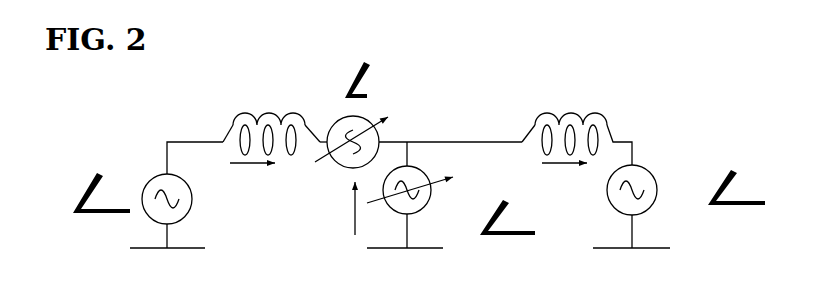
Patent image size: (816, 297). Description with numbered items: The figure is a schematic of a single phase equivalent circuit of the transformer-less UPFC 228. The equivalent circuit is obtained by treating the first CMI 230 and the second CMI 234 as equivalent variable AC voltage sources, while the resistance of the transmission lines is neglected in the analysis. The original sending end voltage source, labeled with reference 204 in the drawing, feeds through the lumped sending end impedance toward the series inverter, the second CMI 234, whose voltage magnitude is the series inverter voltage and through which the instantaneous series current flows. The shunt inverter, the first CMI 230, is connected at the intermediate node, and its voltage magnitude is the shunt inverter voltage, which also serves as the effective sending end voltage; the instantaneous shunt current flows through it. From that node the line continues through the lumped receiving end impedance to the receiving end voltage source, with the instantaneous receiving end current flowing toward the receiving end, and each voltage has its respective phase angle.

The sending-end voltage source 204 is at (150, 219).
The second CMI 234 is at (330, 121).
The first CMI 230 is at (432, 210).
The transformer-less UPFC 228 is at (574, 76).